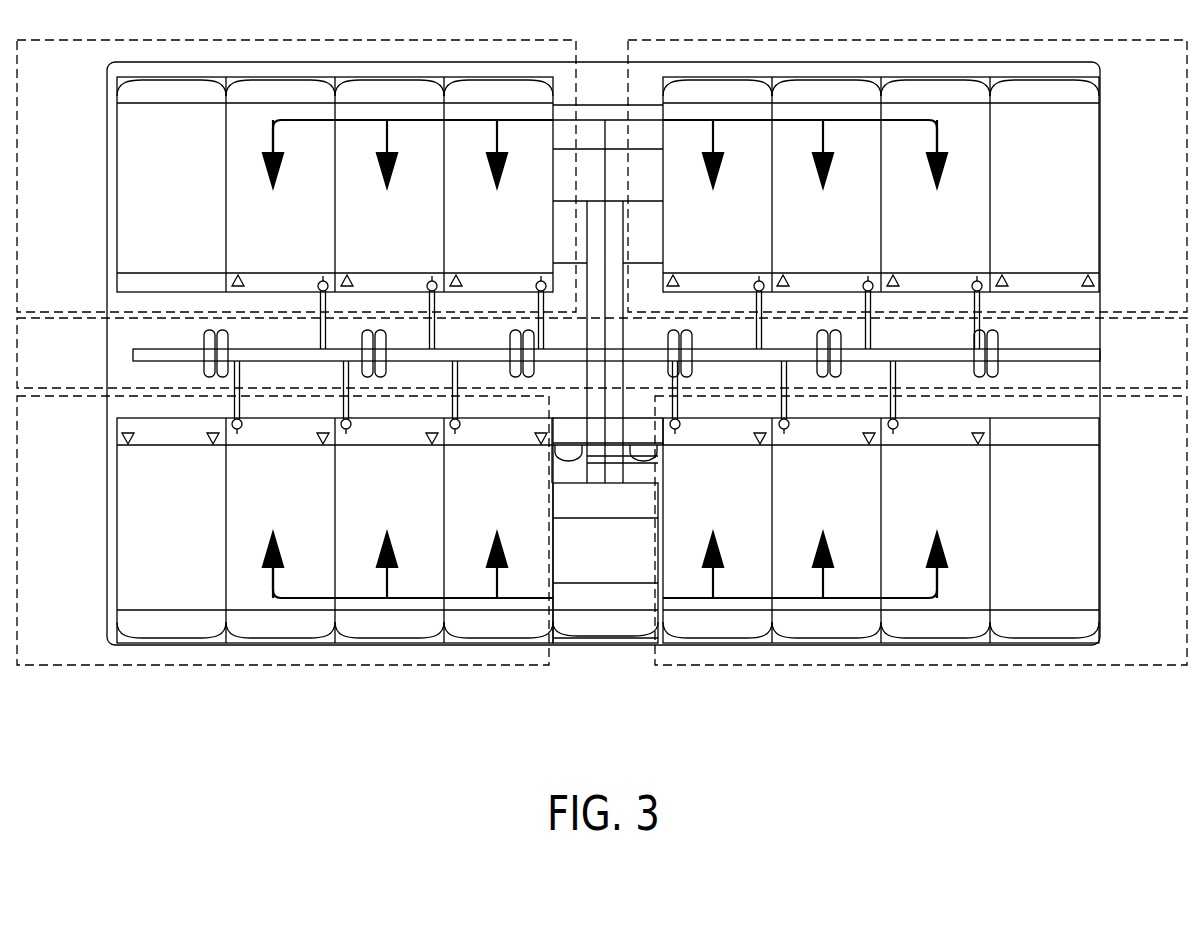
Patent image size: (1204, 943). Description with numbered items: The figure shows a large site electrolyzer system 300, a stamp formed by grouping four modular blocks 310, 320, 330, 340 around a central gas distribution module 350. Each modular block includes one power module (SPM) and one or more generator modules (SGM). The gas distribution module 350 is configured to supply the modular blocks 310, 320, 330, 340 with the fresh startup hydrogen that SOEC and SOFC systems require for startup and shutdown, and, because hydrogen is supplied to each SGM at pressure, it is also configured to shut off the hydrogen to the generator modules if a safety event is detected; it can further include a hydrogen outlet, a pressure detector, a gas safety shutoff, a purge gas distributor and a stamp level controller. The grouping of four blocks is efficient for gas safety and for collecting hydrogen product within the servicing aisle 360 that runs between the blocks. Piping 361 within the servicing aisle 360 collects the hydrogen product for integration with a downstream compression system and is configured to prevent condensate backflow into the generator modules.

The large site electrolyzer system 300 is at (1005, 711).
The modular block 310 is at (51, 270).
The modular block 320 is at (51, 650).
The modular block 330 is at (1136, 294).
The modular block 340 is at (1137, 654).
The gas distribution module 350 is at (589, 687).
The servicing aisle 360 is at (602, 355).
The piping 361 is at (133, 354).